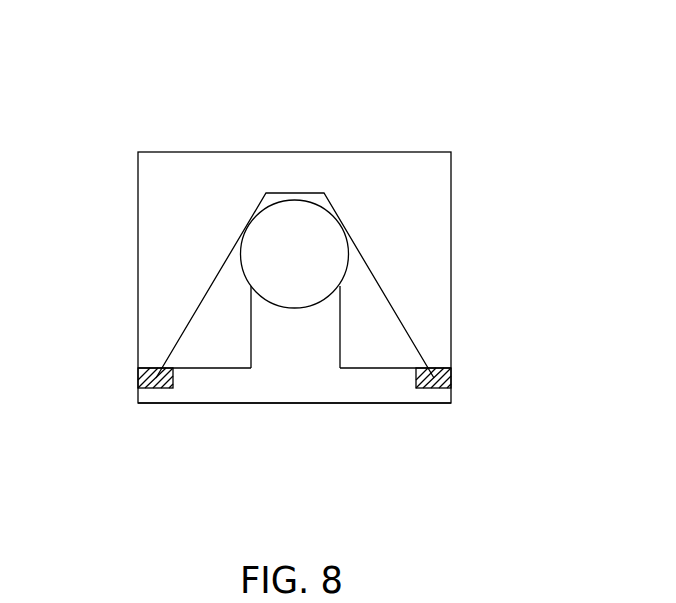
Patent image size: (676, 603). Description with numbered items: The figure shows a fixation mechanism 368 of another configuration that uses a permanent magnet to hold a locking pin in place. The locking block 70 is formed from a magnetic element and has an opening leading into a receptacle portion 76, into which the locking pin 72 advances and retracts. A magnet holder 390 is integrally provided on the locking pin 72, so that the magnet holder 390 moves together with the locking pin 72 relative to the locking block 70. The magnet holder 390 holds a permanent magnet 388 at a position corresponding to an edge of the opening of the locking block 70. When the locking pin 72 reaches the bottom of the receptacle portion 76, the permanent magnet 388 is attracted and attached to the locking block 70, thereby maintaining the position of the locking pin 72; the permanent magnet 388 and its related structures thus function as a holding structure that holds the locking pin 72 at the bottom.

The fixation mechanism 368 is at (440, 118).
The locking block 70 is at (195, 182).
The locking pin 72 is at (297, 233).
The receptacle portion 76 is at (231, 348).
The permanent magnet 388 is at (140, 380).
The magnet holder 390 is at (273, 377).